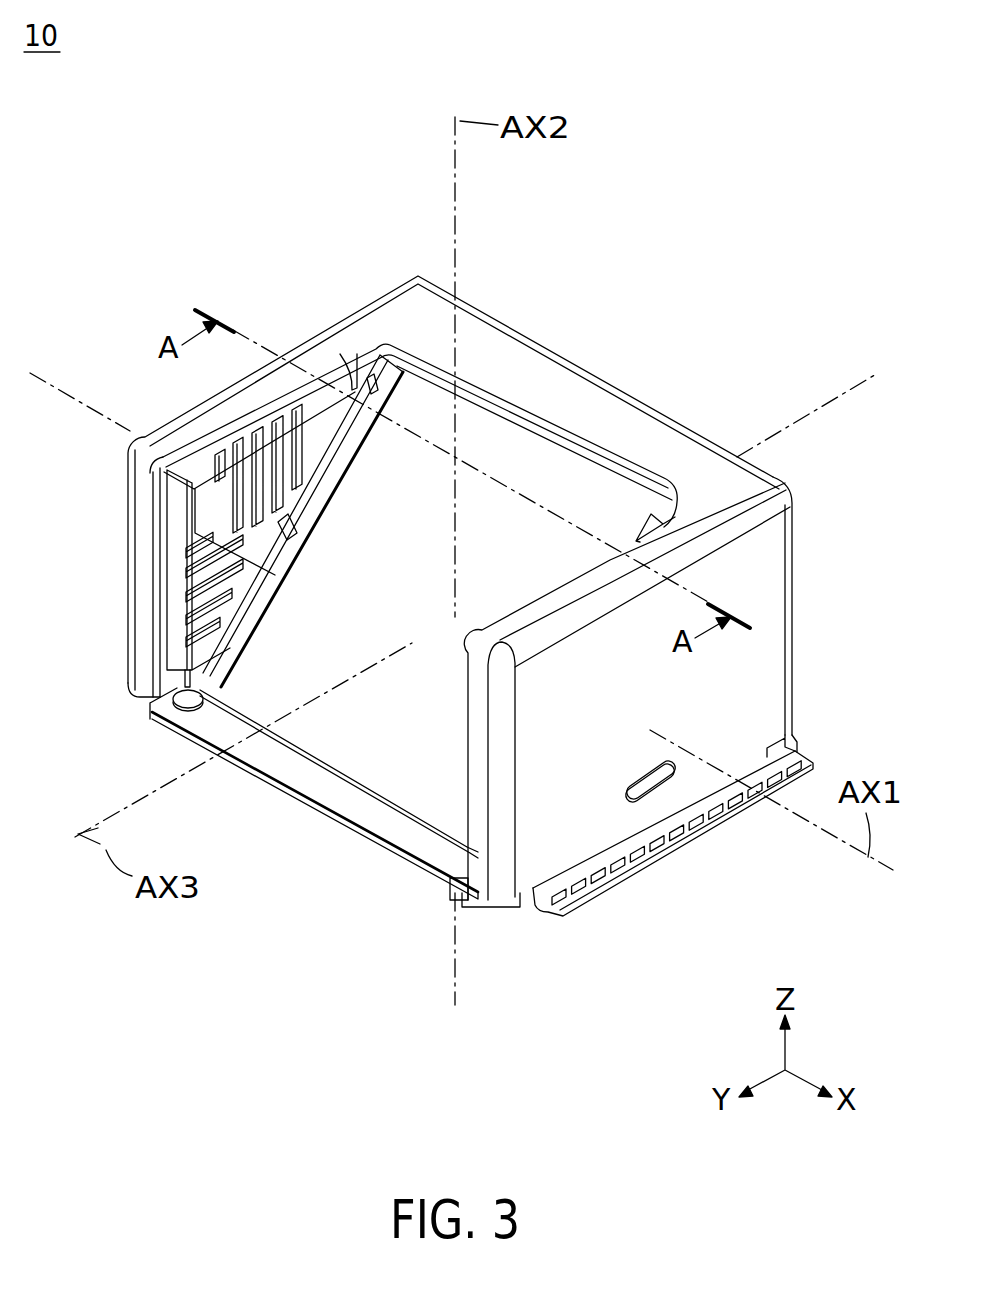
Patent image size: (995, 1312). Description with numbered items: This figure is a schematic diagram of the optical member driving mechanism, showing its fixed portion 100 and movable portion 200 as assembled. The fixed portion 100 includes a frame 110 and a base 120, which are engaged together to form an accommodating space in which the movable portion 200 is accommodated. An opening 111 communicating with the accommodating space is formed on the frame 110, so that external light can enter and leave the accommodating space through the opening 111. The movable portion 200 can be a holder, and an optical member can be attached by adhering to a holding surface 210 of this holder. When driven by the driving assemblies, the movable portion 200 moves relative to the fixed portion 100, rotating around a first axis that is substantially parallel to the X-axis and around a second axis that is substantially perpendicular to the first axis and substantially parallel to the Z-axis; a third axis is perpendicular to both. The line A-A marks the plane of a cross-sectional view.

The fixed portion 100 is at (62, 706).
The frame 110 is at (142, 652).
The opening 111 is at (562, 437).
The base 120 is at (210, 727).
The movable portion 200 is at (178, 597).
The holding surface 210 is at (325, 577).